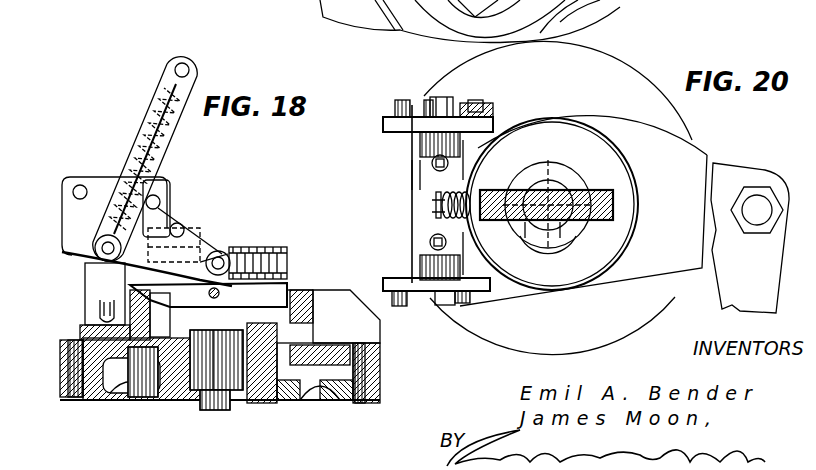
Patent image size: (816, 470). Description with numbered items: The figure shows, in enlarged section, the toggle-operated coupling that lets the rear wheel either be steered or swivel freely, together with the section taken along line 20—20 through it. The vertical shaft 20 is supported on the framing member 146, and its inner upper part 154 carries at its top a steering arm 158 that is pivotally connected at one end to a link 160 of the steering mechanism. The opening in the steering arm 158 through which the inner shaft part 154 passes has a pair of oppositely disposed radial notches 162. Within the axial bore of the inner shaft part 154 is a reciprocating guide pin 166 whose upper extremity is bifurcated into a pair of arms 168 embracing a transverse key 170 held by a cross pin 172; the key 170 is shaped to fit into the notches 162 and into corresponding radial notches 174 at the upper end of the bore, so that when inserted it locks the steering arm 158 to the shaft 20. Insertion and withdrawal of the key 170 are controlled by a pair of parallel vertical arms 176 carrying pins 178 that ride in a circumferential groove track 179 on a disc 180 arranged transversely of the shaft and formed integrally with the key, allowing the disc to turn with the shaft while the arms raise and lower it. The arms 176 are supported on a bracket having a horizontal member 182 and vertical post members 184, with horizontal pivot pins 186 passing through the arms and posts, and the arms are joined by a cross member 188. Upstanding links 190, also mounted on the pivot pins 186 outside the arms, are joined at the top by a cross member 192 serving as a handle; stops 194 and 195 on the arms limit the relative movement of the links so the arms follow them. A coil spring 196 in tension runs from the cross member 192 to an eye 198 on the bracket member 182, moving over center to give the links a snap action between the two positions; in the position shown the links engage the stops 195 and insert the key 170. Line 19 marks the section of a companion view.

In FIG. 18, the section line 19 is at (218, 230).
In FIG. 18, the vertical shaft 20 is at (100, 168).
In FIG. 20, the framing member 146 is at (628, 58).
In FIG. 18, the inner upper part 154 is at (160, 393).
In FIG. 20, the steering arm 158 is at (667, 152).
In FIG. 20, the link 160 is at (723, 293).
In FIG. 18, the radial notches 162 is at (80, 354).
In FIG. 20, the radial notches 162 is at (480, 220).
In FIG. 18, the guide pin 166 is at (178, 400).
In FIG. 20, the arms 168 is at (560, 187).
In FIG. 18, the transverse key 170 is at (308, 273).
In FIG. 20, the transverse key 170 is at (613, 208).
In FIG. 18, the cross pin 172 is at (236, 296).
In FIG. 20, the cross pin 172 is at (540, 187).
In FIG. 18, the radial notches 174 is at (318, 304).
In FIG. 20, the radial notches 174 is at (610, 238).
In FIG. 18, the vertical arms 176 is at (225, 254).
In FIG. 20, the vertical arms 176 is at (490, 110).
In FIG. 18, the pins 178 is at (228, 251).
In FIG. 18, the circumferential groove track 179 is at (288, 265).
In FIG. 18, the disc 180 is at (250, 247).
In FIG. 18, the horizontal member 182 is at (83, 331).
In FIG. 20, the horizontal member 182 is at (414, 177).
In FIG. 18, the vertical post members 184 is at (62, 253).
In FIG. 20, the vertical post members 184 is at (428, 144).
In FIG. 18, the pivot pins 186 is at (100, 249).
In FIG. 20, the pivot pins 186 is at (444, 100).
In FIG. 18, the cross member 188 is at (180, 226).
In FIG. 18, the links 190 is at (160, 90).
In FIG. 20, the links 190 is at (430, 100).
In FIG. 18, the cross member 192 is at (183, 63).
In FIG. 18, the stop 194 is at (73, 193).
In FIG. 20, the stop 194 is at (397, 100).
In FIG. 18, the stop 195 is at (160, 203).
In FIG. 20, the stop 195 is at (475, 100).
In FIG. 18, the coil spring 196 is at (163, 168).
In FIG. 20, the coil spring 196 is at (441, 209).
In FIG. 18, the eye 198 is at (107, 312).
In FIG. 20, the eye 198 is at (436, 199).